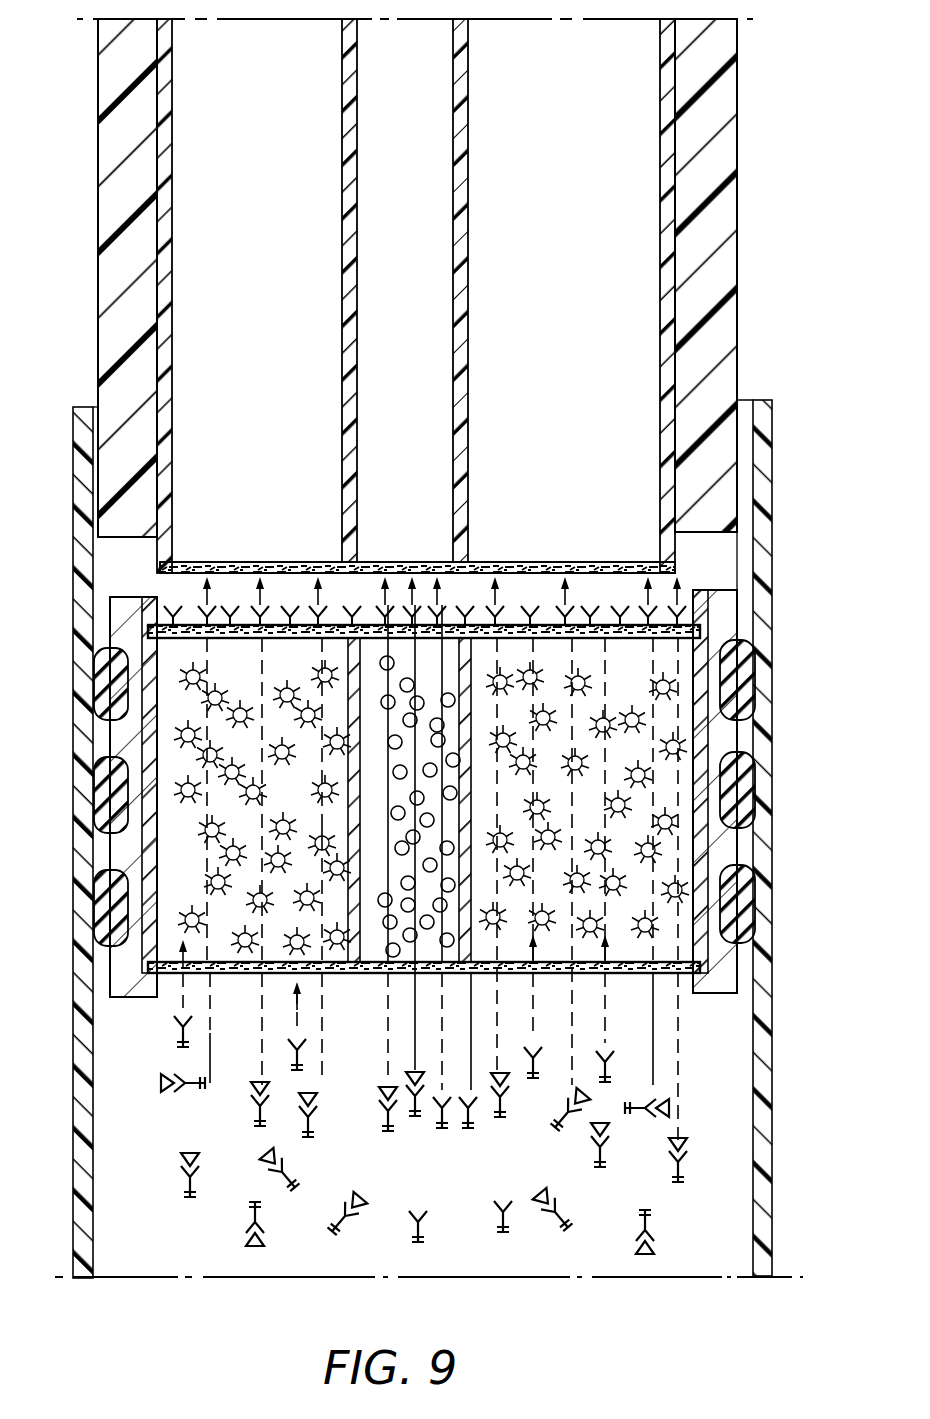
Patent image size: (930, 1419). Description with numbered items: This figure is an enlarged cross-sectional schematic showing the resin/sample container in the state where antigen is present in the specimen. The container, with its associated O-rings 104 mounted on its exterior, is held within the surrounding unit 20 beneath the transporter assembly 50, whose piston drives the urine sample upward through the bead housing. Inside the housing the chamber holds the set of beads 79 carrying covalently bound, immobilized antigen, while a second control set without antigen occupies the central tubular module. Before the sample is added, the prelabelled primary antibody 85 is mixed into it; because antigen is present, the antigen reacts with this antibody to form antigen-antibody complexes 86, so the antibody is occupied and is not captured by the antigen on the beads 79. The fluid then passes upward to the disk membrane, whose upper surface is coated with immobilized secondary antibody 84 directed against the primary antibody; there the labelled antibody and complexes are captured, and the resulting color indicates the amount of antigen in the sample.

The housing 20 is at (773, 548).
The transporter assembly 50 is at (737, 255).
The beads with immobilized antigen 79 is at (200, 832).
The immobilized secondary antibody 84 is at (618, 620).
The primary antibody 85 is at (610, 1060).
The antigen-antibody complexes 86 is at (682, 1170).
The O-rings 104 is at (762, 760).